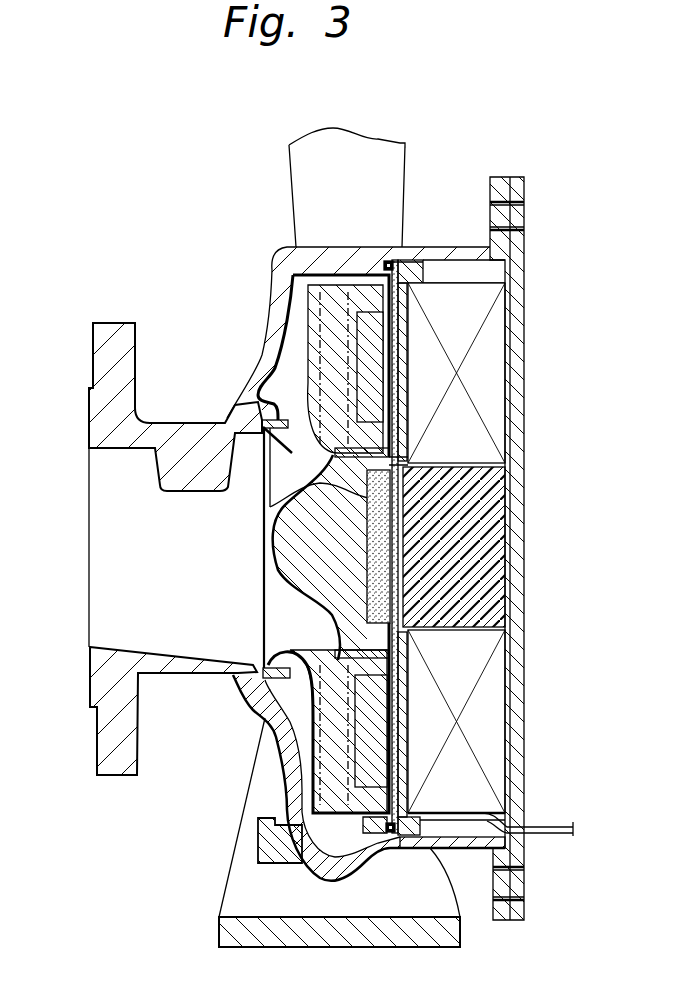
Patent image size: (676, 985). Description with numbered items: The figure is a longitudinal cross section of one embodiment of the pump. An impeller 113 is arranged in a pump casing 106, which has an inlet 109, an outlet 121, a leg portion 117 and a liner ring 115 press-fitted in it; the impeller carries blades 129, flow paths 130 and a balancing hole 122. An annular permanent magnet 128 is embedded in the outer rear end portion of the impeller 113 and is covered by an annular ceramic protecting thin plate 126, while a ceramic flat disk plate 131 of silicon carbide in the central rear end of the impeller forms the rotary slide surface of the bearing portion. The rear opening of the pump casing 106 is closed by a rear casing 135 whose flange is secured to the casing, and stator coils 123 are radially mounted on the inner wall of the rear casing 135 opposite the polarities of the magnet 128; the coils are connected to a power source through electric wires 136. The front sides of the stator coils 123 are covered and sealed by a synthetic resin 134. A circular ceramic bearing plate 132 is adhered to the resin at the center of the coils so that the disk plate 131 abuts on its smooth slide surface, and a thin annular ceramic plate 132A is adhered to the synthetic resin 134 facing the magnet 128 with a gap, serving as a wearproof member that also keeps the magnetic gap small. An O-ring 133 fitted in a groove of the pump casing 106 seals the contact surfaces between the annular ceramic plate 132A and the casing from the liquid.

The pump casing 106 is at (260, 347).
The inlet 109 is at (100, 550).
The impeller 113 is at (305, 311).
The liner ring 115 is at (256, 706).
The leg portion 117 is at (228, 895).
The outlet 121 is at (405, 177).
The balancing hole 122 is at (377, 443).
The stator coils 123 is at (497, 355).
The annular ceramic protecting thin plate 126 is at (390, 405).
The annular permanent magnet 128 is at (370, 322).
The blades 129 is at (336, 455).
The flow paths 130 is at (335, 292).
The ceramic flat disk plate 131 is at (263, 512).
The circular ceramic bearing plate 132 is at (403, 600).
The annular ceramic plate 132A is at (398, 394).
The O-ring 133 is at (388, 262).
The synthetic resin 134 is at (498, 533).
The rear casing 135 is at (524, 440).
The electric wires 136 is at (548, 823).